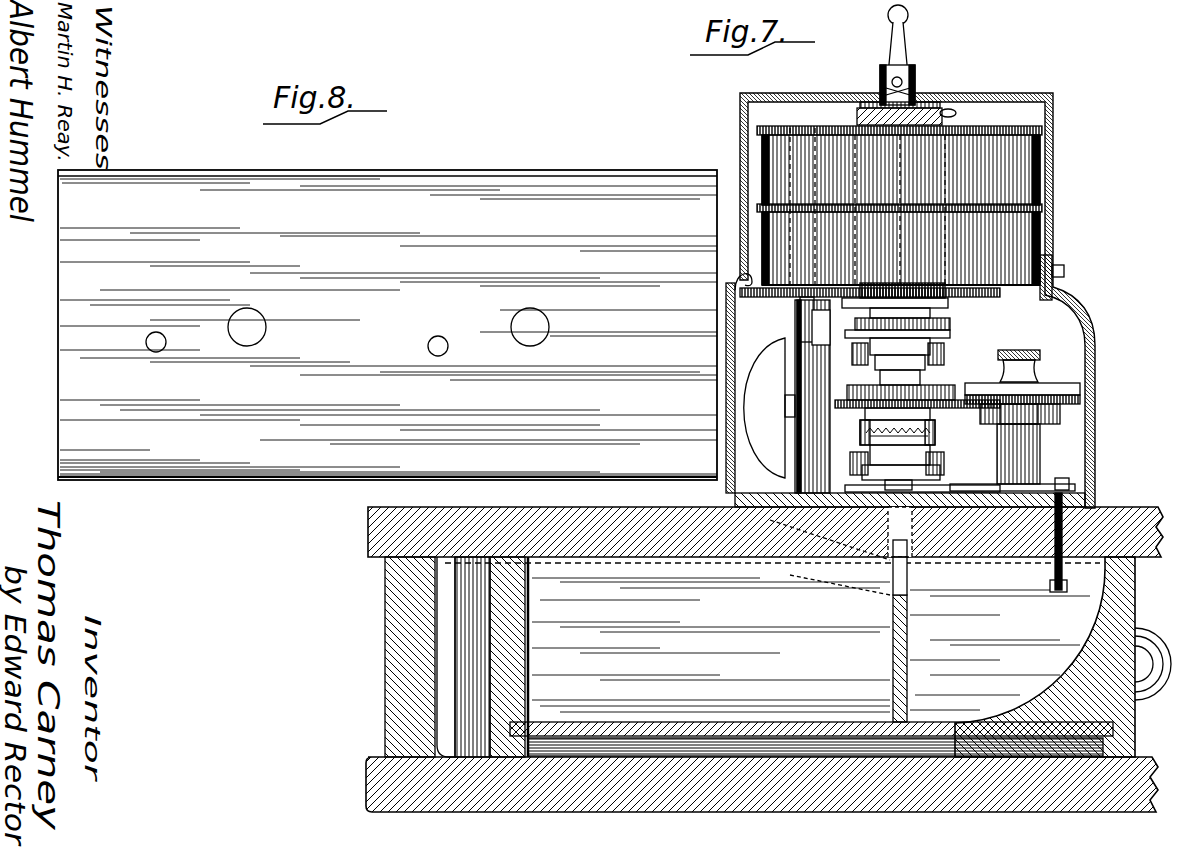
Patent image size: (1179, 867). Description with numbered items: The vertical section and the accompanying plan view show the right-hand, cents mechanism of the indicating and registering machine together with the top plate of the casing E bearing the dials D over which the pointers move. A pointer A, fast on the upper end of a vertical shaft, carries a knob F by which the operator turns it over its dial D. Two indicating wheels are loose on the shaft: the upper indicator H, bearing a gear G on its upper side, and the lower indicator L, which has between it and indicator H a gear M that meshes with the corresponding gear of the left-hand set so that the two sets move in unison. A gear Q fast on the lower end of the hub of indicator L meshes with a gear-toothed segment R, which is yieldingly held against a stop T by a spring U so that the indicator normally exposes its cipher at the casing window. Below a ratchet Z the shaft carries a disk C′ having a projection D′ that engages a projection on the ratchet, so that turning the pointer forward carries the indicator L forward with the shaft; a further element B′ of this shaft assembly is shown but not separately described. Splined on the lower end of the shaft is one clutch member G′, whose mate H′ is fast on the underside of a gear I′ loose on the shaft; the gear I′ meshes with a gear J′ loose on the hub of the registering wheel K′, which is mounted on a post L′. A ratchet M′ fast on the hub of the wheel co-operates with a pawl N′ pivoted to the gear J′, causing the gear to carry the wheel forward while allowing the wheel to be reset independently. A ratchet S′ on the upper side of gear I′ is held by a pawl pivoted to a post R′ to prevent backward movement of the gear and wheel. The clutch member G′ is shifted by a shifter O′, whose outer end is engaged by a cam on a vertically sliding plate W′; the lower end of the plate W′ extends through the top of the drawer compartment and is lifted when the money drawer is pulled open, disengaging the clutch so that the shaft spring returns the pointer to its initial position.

In FIG. 8, the dials D is at (387, 325).
In FIG. 7, the knobs F is at (907, 30).
In FIG. 7, the pointers A is at (915, 90).
In FIG. 7, the upper right hand indicator H is at (790, 128).
In FIG. 7, the gear G is at (815, 128).
In FIG. 7, the casing E is at (757, 130).
In FIG. 7, the gear M is at (1045, 208).
In FIG. 7, the lower right hand indicator L is at (1042, 222).
In FIG. 7, the gear-toothed segment R is at (800, 300).
In FIG. 7, the stop T is at (806, 318).
In FIG. 7, the spring U is at (790, 340).
In FIG. 7, the gear Q is at (945, 291).
In FIG. 7, the ratchet Z is at (948, 304).
In FIG. 7, the projection D′ is at (872, 312).
In FIG. 7, the disk C′ is at (950, 325).
In FIG. 7, the disk B′ is at (950, 336).
In FIG. 7, the ratchet S′ is at (930, 392).
In FIG. 7, the gear I′ is at (860, 412).
In FIG. 7, the pawl N′ is at (935, 425).
In FIG. 7, the clutch member H′ is at (860, 432).
In FIG. 7, the post R′ is at (935, 435).
In FIG. 7, the clutch member G′ is at (944, 450).
In FIG. 7, the shifter O′ is at (865, 478).
In FIG. 7, the registering wheel K′ is at (1046, 388).
In FIG. 7, the gear J′ is at (1082, 401).
In FIG. 7, the ratchet M′ is at (1060, 414).
In FIG. 7, the post L′ is at (1030, 455).
In FIG. 7, the vertically sliding plate W′ is at (841, 551).